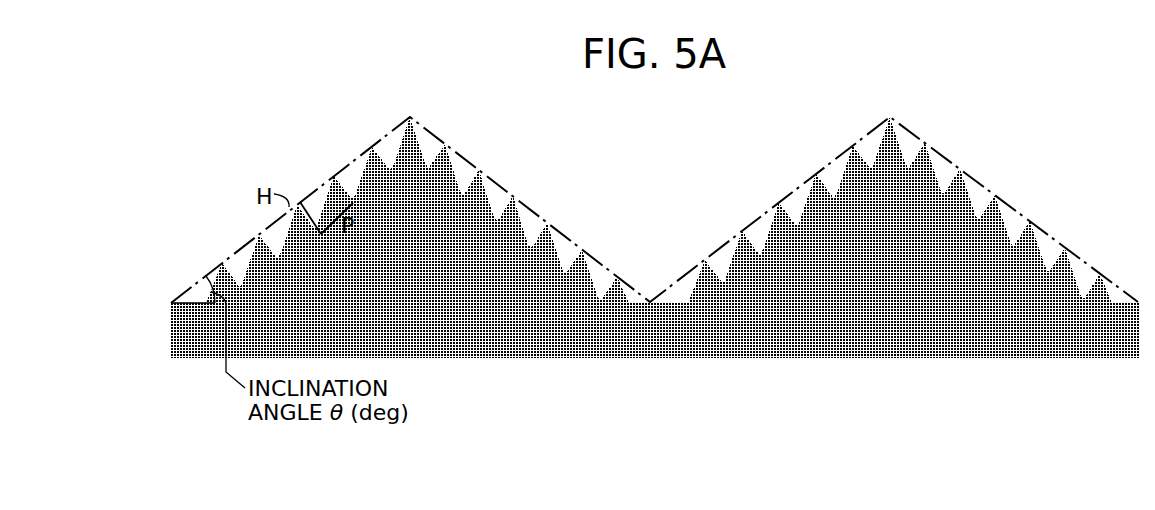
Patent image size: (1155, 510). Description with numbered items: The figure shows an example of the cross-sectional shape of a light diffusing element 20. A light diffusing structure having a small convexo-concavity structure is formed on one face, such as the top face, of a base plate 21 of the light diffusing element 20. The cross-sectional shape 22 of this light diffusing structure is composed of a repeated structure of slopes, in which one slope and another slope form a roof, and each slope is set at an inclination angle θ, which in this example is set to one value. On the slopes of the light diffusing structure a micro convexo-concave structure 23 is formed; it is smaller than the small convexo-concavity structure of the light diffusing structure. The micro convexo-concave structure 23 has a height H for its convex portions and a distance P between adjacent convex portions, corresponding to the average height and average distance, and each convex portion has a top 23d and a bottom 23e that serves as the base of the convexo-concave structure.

The light diffusing element 20 is at (655, 261).
The base plate 21 is at (462, 345).
The cross-sectional shape of the light diffusing structure 22 is at (370, 146).
The micro convexo-concave structure 23 is at (352, 162).
The top 23d is at (225, 263).
The bottom 23e is at (241, 296).